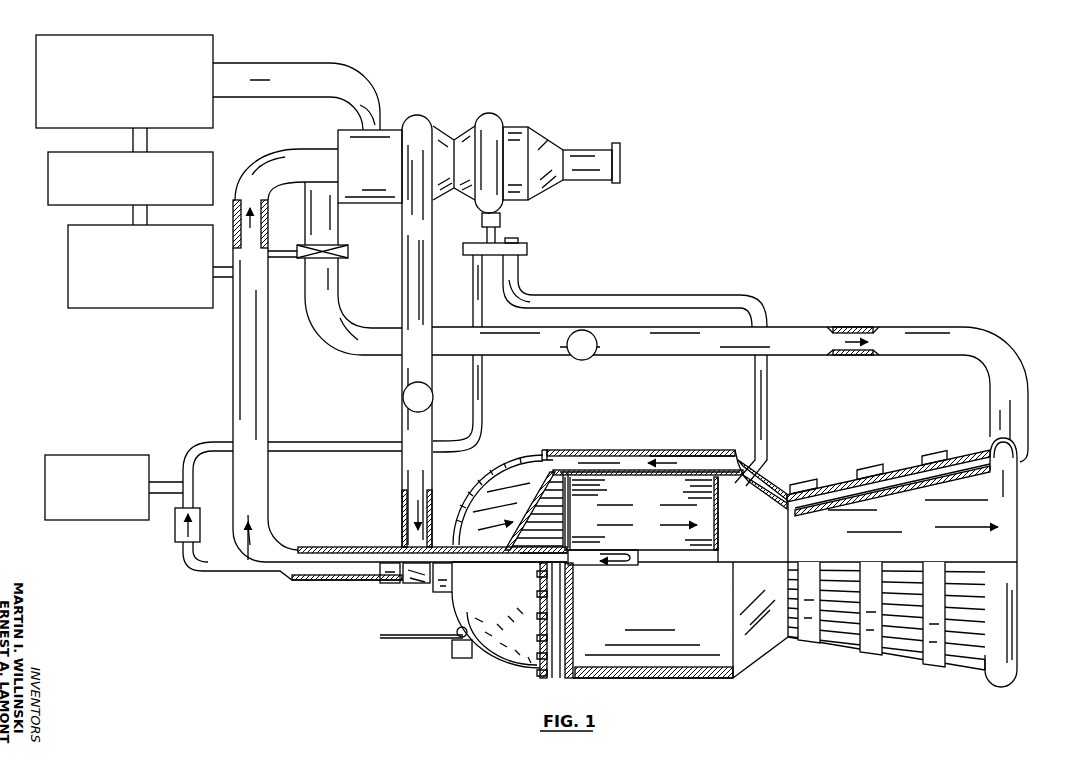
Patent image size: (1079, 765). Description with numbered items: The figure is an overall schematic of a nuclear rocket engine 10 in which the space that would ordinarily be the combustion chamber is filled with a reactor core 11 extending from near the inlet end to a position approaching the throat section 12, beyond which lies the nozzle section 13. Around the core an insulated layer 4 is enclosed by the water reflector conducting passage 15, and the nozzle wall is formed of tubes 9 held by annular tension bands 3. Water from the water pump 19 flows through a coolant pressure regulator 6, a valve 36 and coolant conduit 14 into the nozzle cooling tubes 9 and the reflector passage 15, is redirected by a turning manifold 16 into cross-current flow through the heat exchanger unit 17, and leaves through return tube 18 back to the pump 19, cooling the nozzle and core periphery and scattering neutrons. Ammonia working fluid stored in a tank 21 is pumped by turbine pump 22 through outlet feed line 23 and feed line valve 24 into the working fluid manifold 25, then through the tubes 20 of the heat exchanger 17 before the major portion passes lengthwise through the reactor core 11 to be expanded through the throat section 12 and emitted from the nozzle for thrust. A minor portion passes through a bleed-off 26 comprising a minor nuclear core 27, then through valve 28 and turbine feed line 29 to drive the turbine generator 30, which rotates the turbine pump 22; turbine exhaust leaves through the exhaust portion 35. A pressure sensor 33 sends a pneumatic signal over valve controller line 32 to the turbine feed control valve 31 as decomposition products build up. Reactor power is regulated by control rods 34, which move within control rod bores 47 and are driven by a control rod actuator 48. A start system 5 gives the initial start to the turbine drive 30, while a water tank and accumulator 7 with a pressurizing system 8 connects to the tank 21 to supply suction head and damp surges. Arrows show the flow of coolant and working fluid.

The annular tension bands 3 is at (937, 462).
The insulated layer 4 is at (692, 468).
The start system 5 is at (44, 476).
The coolant pressure regulator 6 is at (344, 249).
The water tank and accumulator 7 is at (98, 309).
The pressurizing system 8 is at (70, 201).
The tubes 9 is at (908, 473).
The rocket engine 10 is at (645, 448).
The reactor core 11 is at (708, 512).
The throat section 12 is at (788, 518).
The nozzle section 13 is at (1008, 481).
The coolant conduit 14 is at (1015, 449).
The water reflector conducting passage 15 is at (603, 452).
The turning manifold 16 is at (549, 451).
The heat exchanger unit 17 is at (540, 482).
The return tube 18 is at (327, 550).
The water pump 19 is at (332, 136).
The tubes 20 is at (498, 500).
The tank 21 is at (213, 53).
The turbine pump 22 is at (418, 121).
The outlet feed line 23 is at (419, 232).
The feed line valve 24 is at (403, 397).
The working fluid manifold 25 is at (474, 503).
The bleed-off 26 is at (540, 557).
The minor nuclear core 27 is at (634, 561).
The valve 28 is at (175, 539).
The turbine feed line 29 is at (473, 273).
The turbine generator 30 is at (494, 119).
The turbine feed control valve 31 is at (519, 249).
The valve controller line 32 is at (562, 298).
The pressure sensor 33 is at (765, 466).
The control rods 34 is at (420, 640).
The exhaust portion 35 is at (598, 158).
The valve 36 is at (590, 358).
The control rod bores 47 is at (478, 648).
The control rod actuator 48 is at (465, 658).